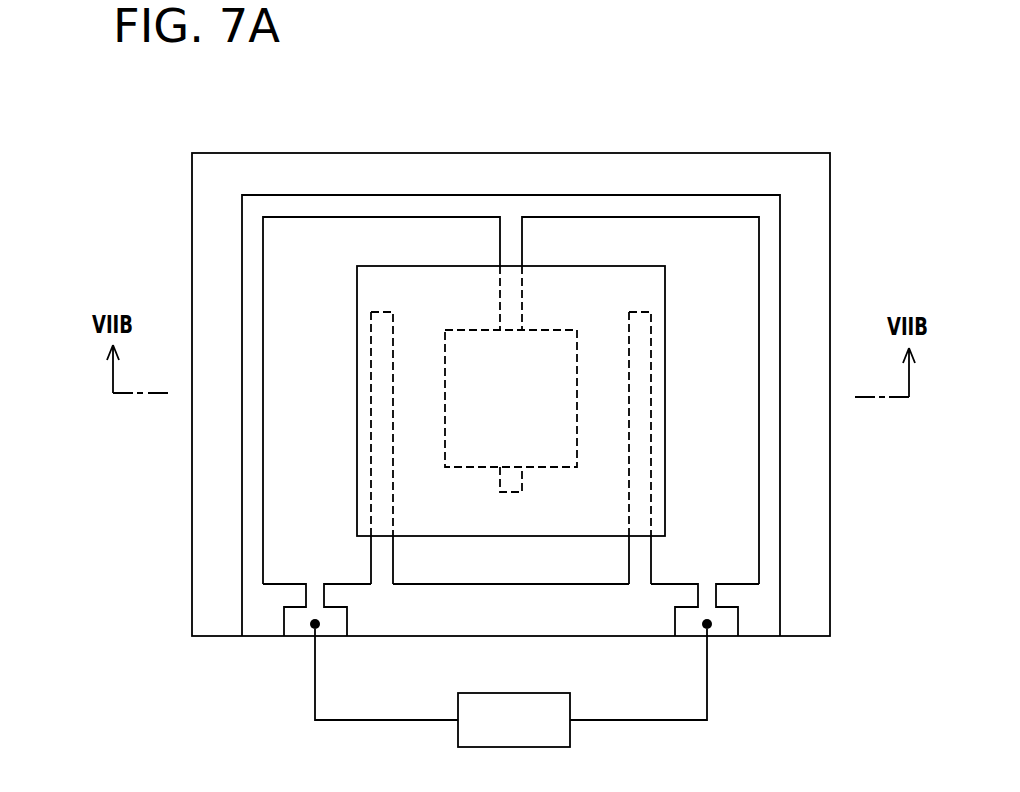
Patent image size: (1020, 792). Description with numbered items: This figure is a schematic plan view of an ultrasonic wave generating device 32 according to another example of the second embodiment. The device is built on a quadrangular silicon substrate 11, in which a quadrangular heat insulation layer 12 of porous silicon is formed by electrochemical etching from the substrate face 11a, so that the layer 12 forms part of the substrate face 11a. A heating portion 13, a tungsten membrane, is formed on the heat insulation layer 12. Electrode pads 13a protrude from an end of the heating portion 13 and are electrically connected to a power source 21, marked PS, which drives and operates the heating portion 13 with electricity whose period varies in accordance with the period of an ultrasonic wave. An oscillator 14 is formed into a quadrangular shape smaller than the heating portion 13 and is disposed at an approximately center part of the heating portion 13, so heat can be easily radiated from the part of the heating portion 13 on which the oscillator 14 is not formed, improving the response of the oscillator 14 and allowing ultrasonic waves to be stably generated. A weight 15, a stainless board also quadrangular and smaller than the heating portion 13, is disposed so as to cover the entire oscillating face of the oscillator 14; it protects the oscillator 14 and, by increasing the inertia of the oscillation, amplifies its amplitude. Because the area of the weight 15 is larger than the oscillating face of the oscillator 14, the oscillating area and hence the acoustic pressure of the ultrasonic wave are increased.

The substrate face 11a is at (224, 163).
The substrate 11 is at (277, 155).
The heat insulation layer 12 is at (365, 203).
The heating portion 13 is at (648, 238).
The electrode pads 13a is at (298, 630).
The oscillator 14 is at (549, 358).
The weight 15 is at (447, 265).
The power source 21 is at (543, 693).
The ultrasonic wave generating device 32 is at (786, 119).